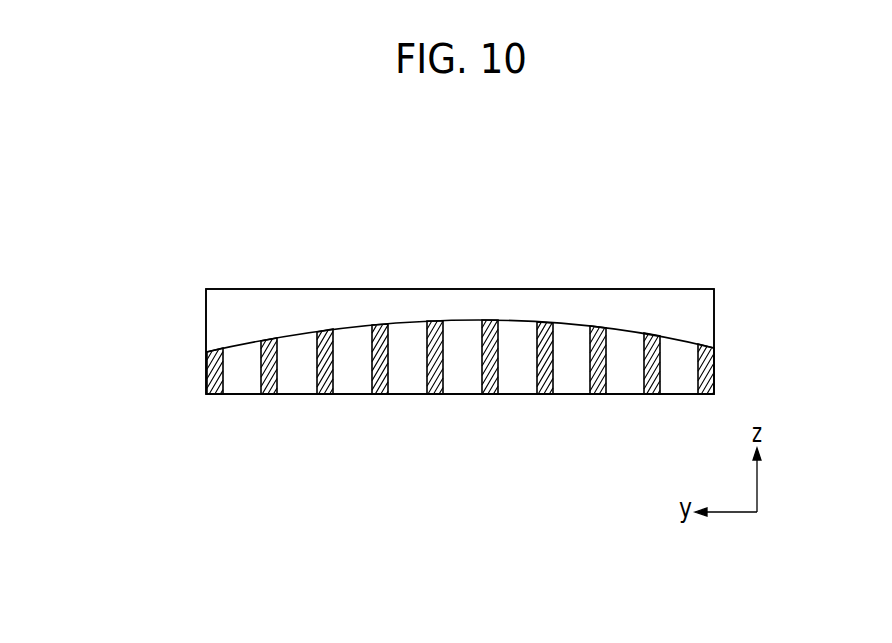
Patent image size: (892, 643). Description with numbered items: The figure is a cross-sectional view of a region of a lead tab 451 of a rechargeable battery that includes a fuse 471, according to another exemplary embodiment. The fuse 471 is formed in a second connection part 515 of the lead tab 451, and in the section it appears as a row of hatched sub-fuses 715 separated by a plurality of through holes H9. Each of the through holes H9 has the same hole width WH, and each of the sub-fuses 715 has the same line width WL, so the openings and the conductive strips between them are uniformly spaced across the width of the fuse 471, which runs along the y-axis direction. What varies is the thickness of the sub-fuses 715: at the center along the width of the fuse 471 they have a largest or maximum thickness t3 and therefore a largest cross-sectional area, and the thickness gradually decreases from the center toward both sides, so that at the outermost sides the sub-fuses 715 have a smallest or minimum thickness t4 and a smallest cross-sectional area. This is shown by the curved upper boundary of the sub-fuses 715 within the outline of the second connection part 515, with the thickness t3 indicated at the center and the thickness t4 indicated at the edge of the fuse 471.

The sub-fuses 715 is at (270, 342).
The second connection part 515 is at (618, 288).
The lead tab 451 is at (460, 341).
The fuse 471 is at (206, 365).
The through holes H9 is at (357, 382).
The largest thickness t3 is at (461, 320).
The smallest thickness t4 is at (716, 348).
The hole width WH is at (551, 400).
The line width WL is at (645, 400).